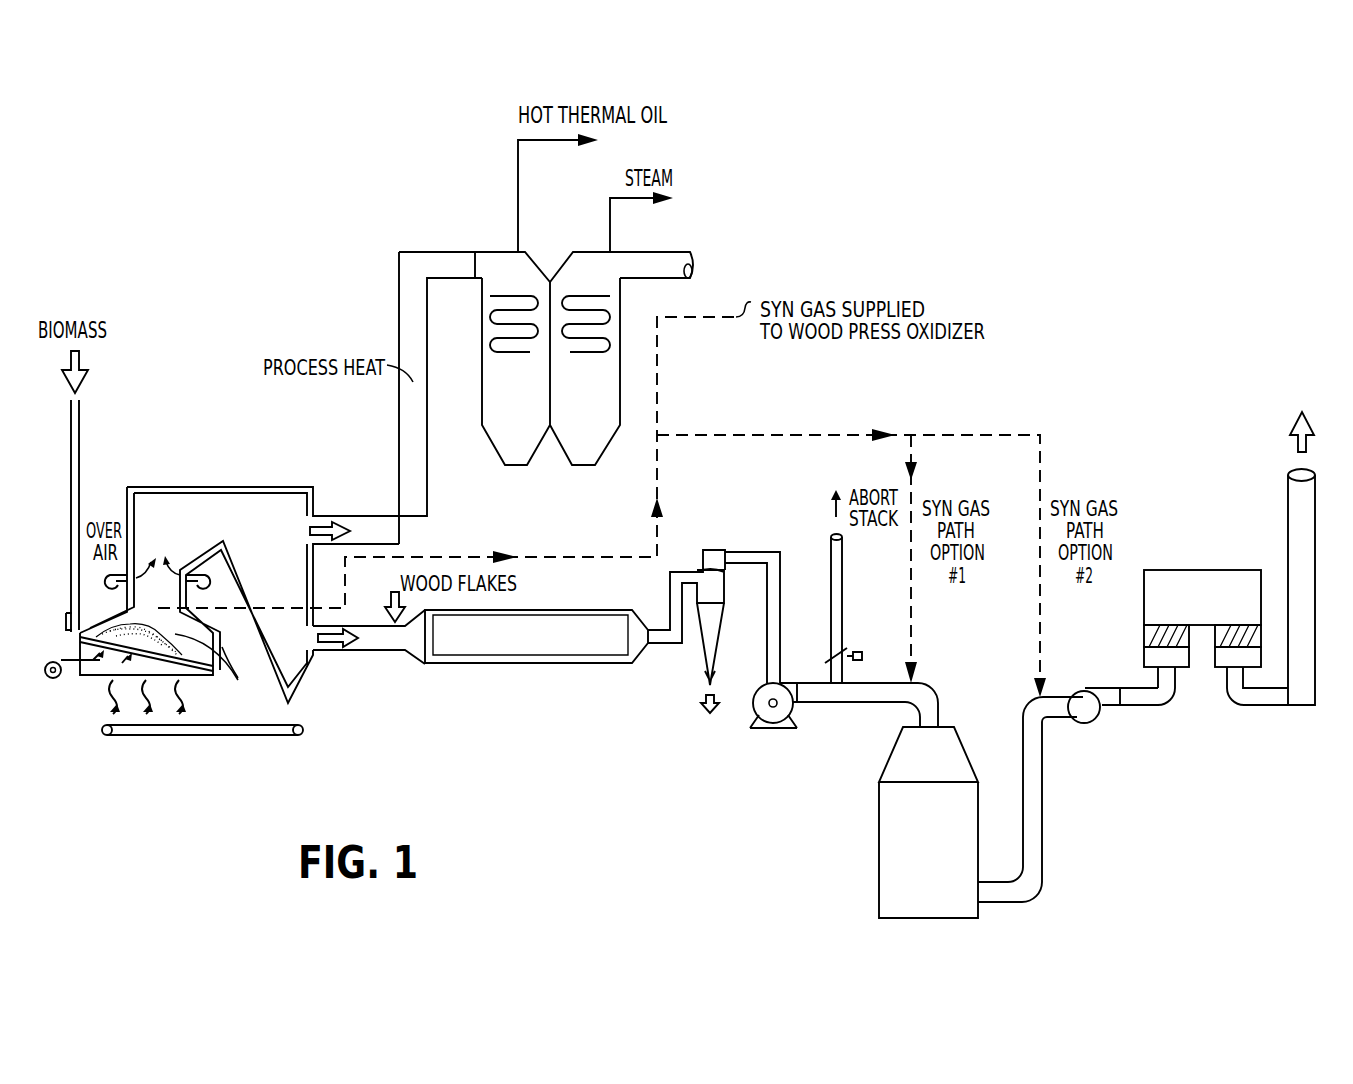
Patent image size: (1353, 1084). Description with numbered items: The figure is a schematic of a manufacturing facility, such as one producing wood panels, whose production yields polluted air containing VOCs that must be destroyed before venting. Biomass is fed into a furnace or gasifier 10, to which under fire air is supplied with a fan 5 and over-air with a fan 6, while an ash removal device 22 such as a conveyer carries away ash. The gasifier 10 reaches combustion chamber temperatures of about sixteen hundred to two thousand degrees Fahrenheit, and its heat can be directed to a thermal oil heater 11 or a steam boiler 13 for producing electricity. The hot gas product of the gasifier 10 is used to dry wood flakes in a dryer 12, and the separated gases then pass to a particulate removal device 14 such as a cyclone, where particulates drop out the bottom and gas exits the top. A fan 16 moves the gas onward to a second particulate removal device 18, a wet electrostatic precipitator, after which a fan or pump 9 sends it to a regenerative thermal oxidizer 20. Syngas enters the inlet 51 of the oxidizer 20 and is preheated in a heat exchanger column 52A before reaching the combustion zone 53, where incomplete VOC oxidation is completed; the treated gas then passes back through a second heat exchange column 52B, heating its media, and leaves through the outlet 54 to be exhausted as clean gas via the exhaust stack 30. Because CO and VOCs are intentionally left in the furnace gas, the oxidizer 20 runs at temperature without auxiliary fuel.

The fan 5 is at (53, 680).
The fan 6 is at (108, 590).
The fan or pump 9 is at (1090, 718).
The furnace or gasifier 10 is at (88, 680).
The thermal oil heater 11 is at (512, 438).
The dryer 12 is at (470, 665).
The steam boiler 13 is at (578, 438).
The particulate removal device 14 is at (700, 653).
The fan 16 is at (787, 722).
The second particulate removal device 18 is at (893, 890).
The oxidizer 20 is at (1184, 595).
The ash removal device 22 is at (123, 736).
The exhaust stack 30 is at (1303, 508).
The inlet 51 is at (1170, 683).
The heat exchanger column 52A is at (1148, 638).
The second heat exchange column 52B is at (1253, 637).
The combustion zone 53 is at (1148, 602).
The outlet 54 is at (1237, 678).